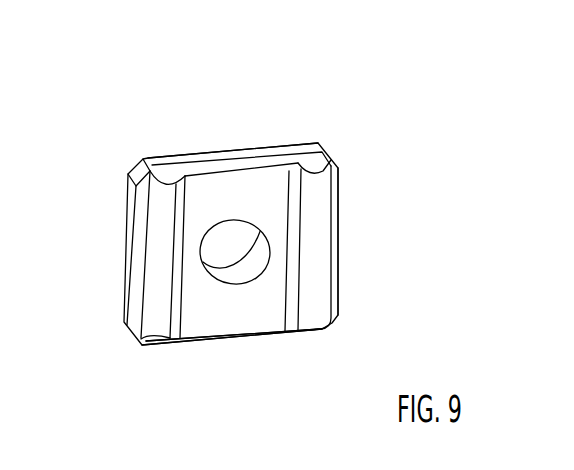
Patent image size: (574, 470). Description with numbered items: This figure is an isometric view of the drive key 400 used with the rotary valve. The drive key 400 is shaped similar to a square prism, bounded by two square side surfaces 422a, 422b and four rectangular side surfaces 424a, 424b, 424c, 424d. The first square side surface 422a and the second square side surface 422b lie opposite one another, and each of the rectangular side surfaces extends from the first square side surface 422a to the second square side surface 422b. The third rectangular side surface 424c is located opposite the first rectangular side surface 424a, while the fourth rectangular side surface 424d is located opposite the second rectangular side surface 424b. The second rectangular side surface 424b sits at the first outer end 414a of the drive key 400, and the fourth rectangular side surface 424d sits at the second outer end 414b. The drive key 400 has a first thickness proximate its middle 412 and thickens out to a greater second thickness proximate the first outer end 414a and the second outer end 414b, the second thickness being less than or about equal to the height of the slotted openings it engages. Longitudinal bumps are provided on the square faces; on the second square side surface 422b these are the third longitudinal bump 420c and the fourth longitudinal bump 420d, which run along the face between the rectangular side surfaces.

The drive key 400 is at (106, 71).
The middle 412 is at (230, 157).
The first outer end 414a is at (123, 295).
The second outer end 414b is at (338, 254).
The third longitudinal bump 420c is at (165, 197).
The fourth longitudinal bump 420d is at (320, 178).
The first square side surface 422a is at (139, 161).
The second square side surface 422b is at (249, 319).
The first rectangular side surface 424a is at (162, 157).
The second rectangular side surface 424b is at (127, 236).
The third rectangular side surface 424c is at (176, 345).
The fourth rectangular side surface 424d is at (333, 289).